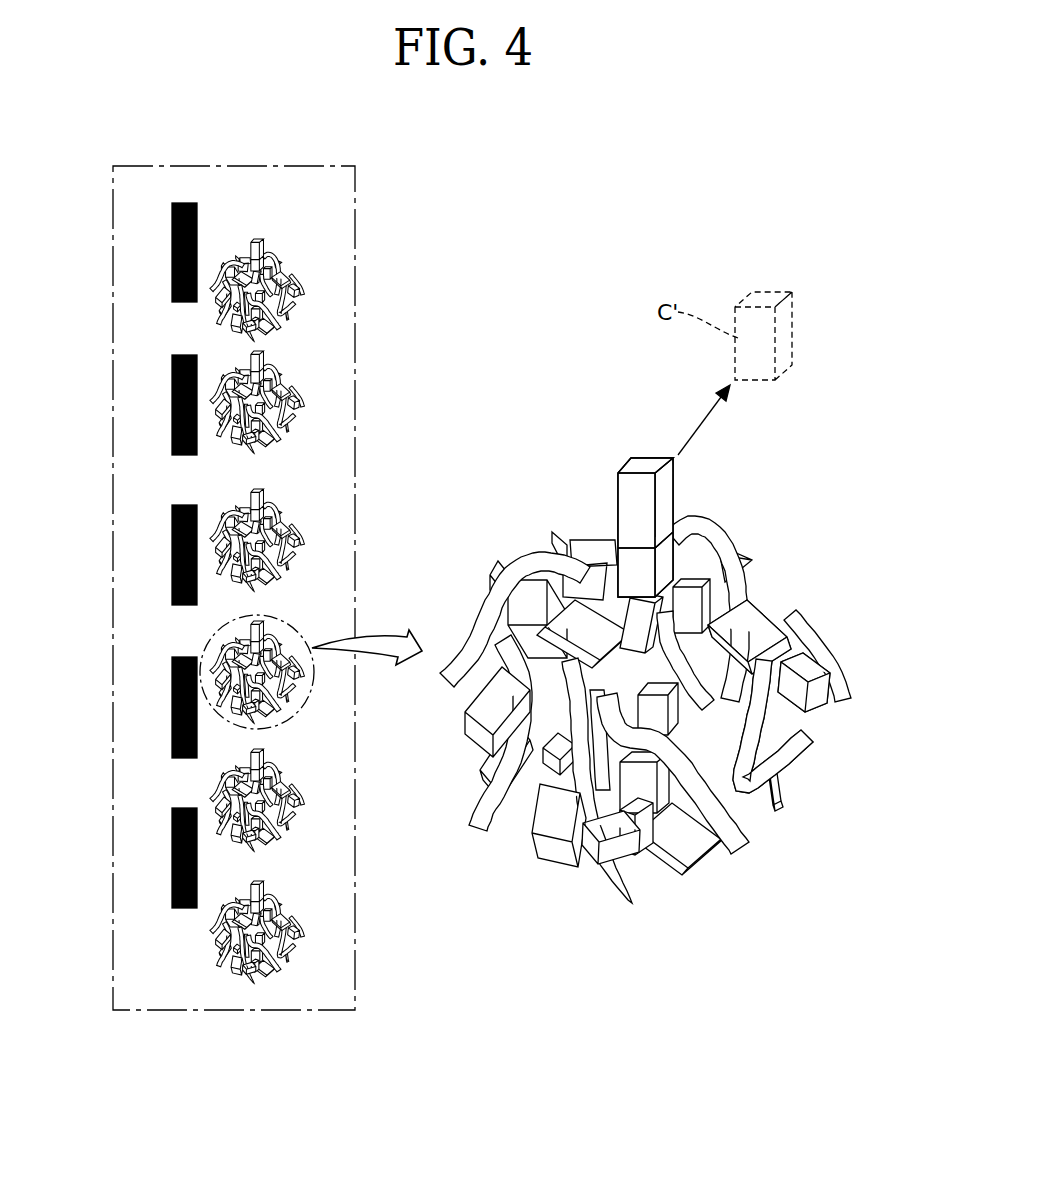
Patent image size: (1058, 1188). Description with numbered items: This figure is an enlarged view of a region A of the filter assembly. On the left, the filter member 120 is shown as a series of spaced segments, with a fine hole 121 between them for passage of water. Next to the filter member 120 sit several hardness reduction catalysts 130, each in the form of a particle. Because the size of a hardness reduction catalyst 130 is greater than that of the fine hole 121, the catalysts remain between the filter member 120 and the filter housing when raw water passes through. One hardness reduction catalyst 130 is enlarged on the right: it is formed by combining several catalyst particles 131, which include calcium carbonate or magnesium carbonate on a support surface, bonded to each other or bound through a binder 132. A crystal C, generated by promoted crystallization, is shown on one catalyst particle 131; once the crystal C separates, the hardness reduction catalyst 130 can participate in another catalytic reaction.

The filter member 120 is at (172, 247).
The fine hole 121 is at (184, 344).
The hardness reduction catalyst 130 is at (583, 571).
The catalyst particle 131 is at (665, 557).
The binder 132 is at (750, 732).
The region A is at (207, 165).
The crystal C is at (630, 500).